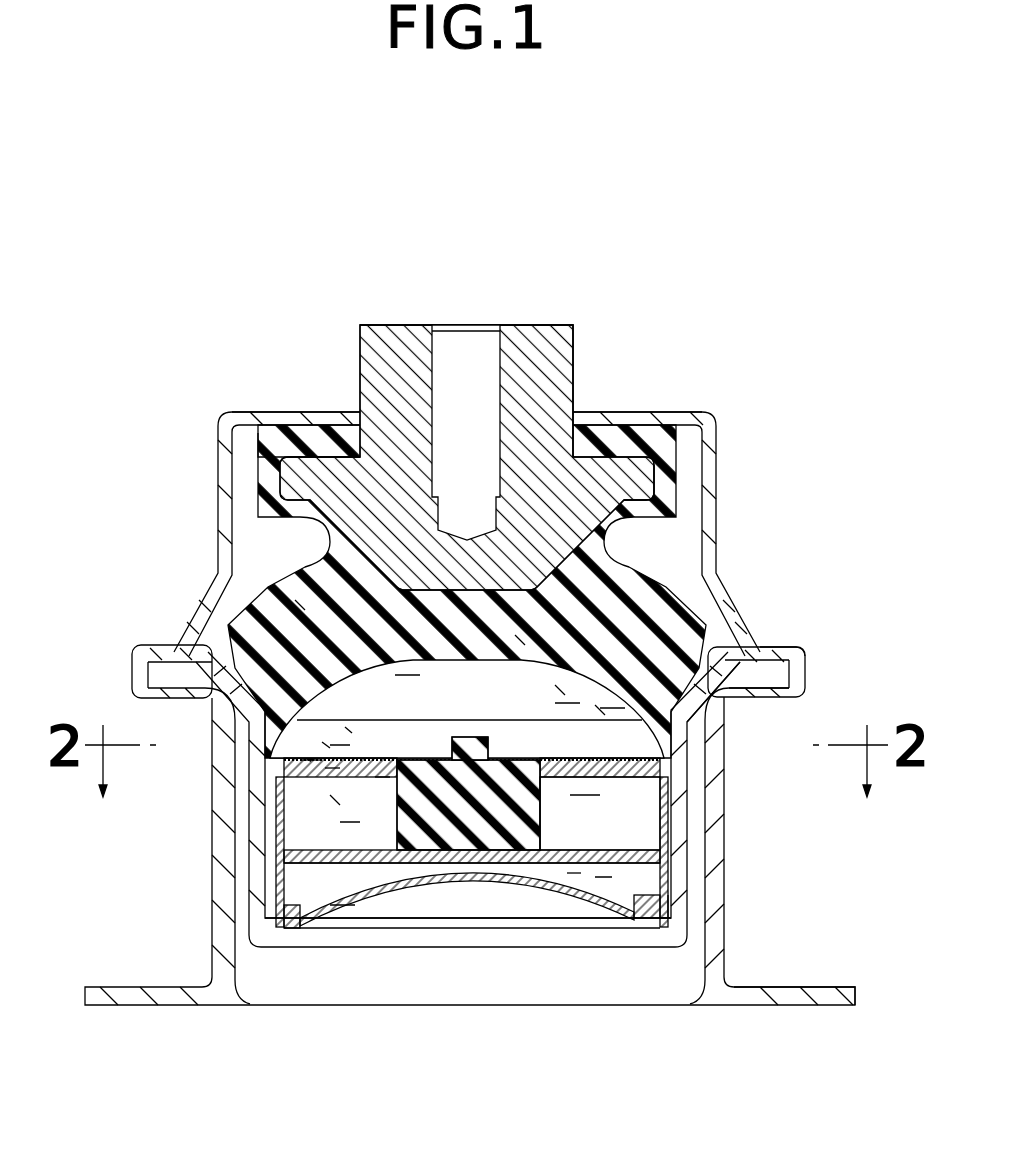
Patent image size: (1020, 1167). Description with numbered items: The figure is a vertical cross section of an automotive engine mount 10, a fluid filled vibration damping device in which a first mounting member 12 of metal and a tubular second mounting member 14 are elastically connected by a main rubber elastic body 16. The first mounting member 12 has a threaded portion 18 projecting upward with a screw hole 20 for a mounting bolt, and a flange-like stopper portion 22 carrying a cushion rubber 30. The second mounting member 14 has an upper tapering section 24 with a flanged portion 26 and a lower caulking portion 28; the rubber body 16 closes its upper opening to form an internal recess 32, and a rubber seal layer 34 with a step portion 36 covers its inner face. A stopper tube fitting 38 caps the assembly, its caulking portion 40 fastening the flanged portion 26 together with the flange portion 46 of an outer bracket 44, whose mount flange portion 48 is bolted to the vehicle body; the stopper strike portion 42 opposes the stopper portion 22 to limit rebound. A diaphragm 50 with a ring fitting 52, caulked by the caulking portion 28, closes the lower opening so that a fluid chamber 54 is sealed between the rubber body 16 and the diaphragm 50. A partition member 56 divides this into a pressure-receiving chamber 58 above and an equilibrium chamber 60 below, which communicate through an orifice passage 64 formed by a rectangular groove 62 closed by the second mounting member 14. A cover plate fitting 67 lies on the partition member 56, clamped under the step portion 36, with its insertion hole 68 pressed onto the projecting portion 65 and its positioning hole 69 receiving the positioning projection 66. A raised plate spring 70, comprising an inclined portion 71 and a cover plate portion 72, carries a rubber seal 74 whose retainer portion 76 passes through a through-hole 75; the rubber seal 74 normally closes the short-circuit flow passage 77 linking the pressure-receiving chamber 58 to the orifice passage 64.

The engine mount 10 is at (676, 280).
The first mounting member 12 is at (384, 318).
The second mounting member 14 is at (640, 776).
The main rubber elastic body 16 is at (265, 605).
The threaded portion 18 is at (556, 362).
The screw hole 20 is at (490, 330).
The stopper portion 22 is at (634, 482).
The tapering section 24 is at (705, 703).
The flanged portion 26 is at (762, 658).
The caulking portion 28 is at (258, 950).
The cushion rubber 30 is at (318, 440).
The internal recess 32 is at (560, 690).
The rubber seal layer 34 is at (668, 905).
The step portion 36 is at (262, 785).
The stopper tube fitting 38 is at (725, 498).
The caulking portion 40 is at (800, 668).
The stopper strike portion 42 is at (680, 415).
The outer bracket 44 is at (205, 925).
The flange portion 46 is at (770, 677).
The mount flange portion 48 is at (840, 986).
The diaphragm 50 is at (495, 880).
The ring fitting 52 is at (640, 908).
The fluid chamber 54 is at (600, 710).
The partition member 56 is at (587, 880).
The pressure-receiving chamber 58 is at (453, 700).
The equilibrium chamber 60 is at (616, 888).
The rectangular groove 62 is at (664, 835).
The orifice passage 64 is at (612, 854).
The projecting portion 65 is at (520, 640).
The positioning projection 66 is at (696, 776).
The cover plate fitting 67 is at (300, 605).
The insertion hole 68 is at (462, 762).
The positioning hole 69 is at (610, 827).
The plate spring 70 is at (165, 672).
The inclined portion 71 is at (310, 770).
The cover plate portion 72 is at (342, 720).
The rubber seal 74 is at (335, 795).
The through-hole 75 is at (330, 768).
The retainer portion 76 is at (318, 735).
The short-circuit flow passage 77 is at (380, 775).